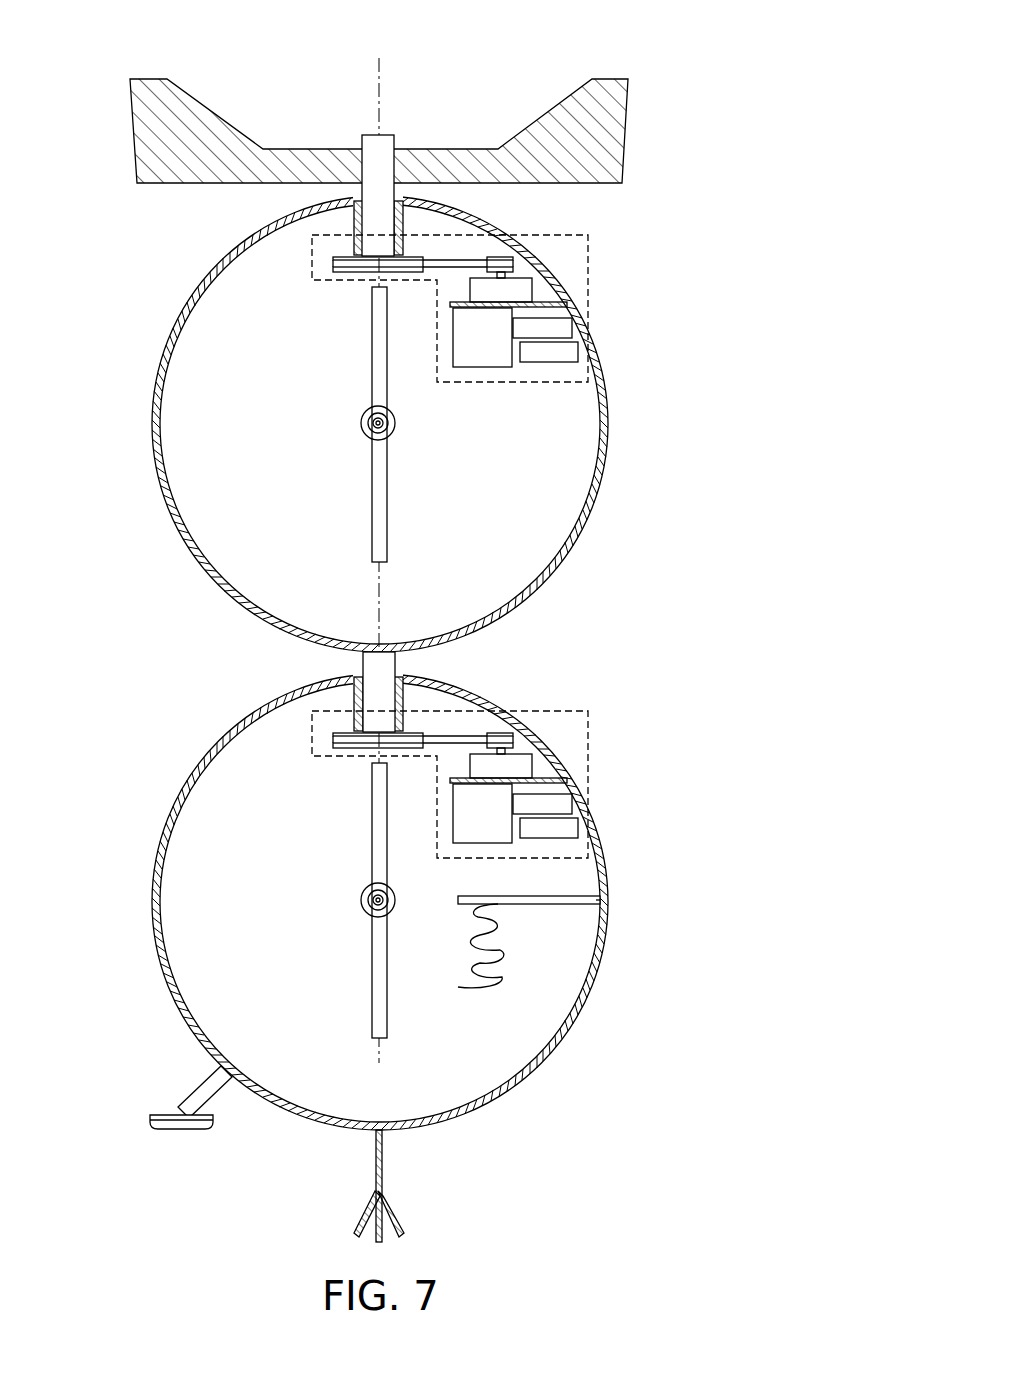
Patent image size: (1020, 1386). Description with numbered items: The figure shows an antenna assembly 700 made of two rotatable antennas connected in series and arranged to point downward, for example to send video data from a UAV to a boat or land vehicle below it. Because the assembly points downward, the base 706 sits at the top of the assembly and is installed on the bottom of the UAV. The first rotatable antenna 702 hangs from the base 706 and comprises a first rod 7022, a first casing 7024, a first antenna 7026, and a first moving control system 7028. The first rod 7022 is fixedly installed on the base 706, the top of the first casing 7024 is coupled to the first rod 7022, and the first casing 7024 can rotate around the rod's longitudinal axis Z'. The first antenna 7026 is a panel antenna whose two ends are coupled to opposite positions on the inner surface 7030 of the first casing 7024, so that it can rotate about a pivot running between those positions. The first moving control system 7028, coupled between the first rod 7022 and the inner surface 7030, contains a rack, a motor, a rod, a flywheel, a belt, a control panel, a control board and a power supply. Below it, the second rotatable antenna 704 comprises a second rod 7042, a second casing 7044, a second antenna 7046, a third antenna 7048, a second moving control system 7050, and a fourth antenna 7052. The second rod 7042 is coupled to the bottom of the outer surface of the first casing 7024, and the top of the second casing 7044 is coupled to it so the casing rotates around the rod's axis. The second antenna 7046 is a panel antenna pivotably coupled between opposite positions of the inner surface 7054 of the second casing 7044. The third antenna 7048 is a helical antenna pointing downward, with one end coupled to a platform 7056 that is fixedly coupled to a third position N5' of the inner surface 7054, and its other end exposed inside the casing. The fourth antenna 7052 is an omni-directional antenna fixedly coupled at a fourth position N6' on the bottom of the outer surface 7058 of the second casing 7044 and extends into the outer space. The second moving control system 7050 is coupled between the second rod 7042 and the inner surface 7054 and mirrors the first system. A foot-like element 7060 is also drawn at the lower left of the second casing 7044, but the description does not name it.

The antenna assembly 700 is at (438, 621).
The first rotatable antenna 702 is at (456, 365).
The second rotatable antenna 704 is at (413, 946).
The base 706 is at (612, 137).
The first rod 7022 is at (384, 143).
The first casing 7024 is at (603, 405).
The first antenna 7026 is at (374, 498).
The first moving control system 7028 is at (589, 266).
The inner surface 7030 is at (557, 540).
The second rod 7042 is at (396, 662).
The second casing 7044 is at (593, 967).
The second antenna 7046 is at (374, 974).
The third antenna 7048 is at (497, 950).
The second moving control system 7050 is at (589, 742).
The fourth antenna 7052 is at (376, 1170).
The inner surface 7054 is at (520, 1065).
The platform 7056 is at (563, 900).
The outer surface 7058 is at (157, 963).
The foot 7060 is at (200, 1087).
The third position N5' is at (638, 903).
The fourth position N6' is at (421, 1152).